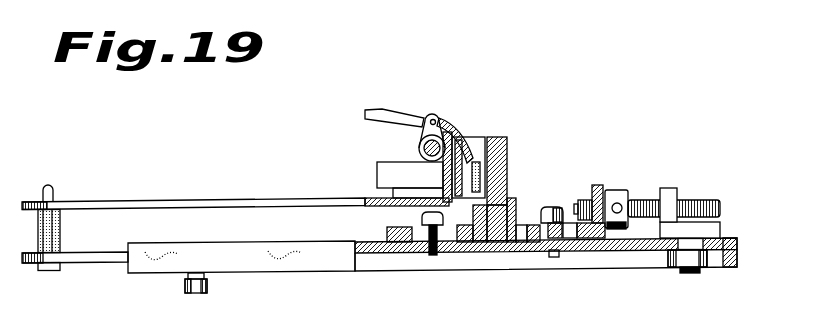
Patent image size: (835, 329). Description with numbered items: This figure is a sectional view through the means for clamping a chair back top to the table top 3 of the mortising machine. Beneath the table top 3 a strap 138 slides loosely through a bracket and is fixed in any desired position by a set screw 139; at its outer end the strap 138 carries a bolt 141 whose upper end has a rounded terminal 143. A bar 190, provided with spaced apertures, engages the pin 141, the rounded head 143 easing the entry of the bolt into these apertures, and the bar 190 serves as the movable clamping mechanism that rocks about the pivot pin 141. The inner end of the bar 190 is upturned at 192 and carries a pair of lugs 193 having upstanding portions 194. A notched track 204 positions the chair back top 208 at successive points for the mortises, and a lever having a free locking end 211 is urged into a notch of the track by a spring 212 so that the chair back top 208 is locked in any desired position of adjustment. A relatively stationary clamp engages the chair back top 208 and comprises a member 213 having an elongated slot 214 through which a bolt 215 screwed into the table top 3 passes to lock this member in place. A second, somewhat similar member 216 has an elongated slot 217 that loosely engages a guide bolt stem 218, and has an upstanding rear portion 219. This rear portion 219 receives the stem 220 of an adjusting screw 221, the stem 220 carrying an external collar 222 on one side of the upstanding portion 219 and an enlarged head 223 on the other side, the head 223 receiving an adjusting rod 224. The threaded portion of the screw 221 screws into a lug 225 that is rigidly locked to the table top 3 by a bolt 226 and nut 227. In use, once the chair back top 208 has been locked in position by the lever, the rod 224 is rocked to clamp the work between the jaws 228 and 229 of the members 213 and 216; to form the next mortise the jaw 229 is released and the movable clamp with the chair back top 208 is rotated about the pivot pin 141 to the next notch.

The table top 3 is at (252, 240).
The strap 138 is at (105, 264).
The set screw 139 is at (196, 294).
The bolt 141 is at (45, 271).
The rounded terminal 143 is at (50, 184).
The bar 190 is at (165, 200).
The upturned inner end 192 is at (478, 136).
The lugs 193 is at (421, 150).
The upstanding portions 194 is at (436, 115).
The notched track 204 is at (410, 180).
The chair back top 208 is at (513, 156).
The free locking end 211 is at (500, 137).
The spring 212 is at (478, 178).
The member 213 is at (452, 251).
The elongated slot 214 is at (417, 223).
The bolt 215 is at (430, 256).
The second member 216 is at (512, 248).
The elongated slot 217 is at (551, 258).
The guide bolt stem 218 is at (570, 251).
The upstanding rear portion 219 is at (604, 185).
The stem 220 is at (595, 240).
The adjusting screw 221 is at (706, 200).
The external collar 222 is at (585, 197).
The enlarged head 223 is at (628, 190).
The adjusting rod 224 is at (618, 230).
The lug 225 is at (676, 188).
The bolt 226 is at (698, 272).
The nut 227 is at (738, 244).
The jaw 228 is at (482, 246).
The jaw 229 is at (512, 199).